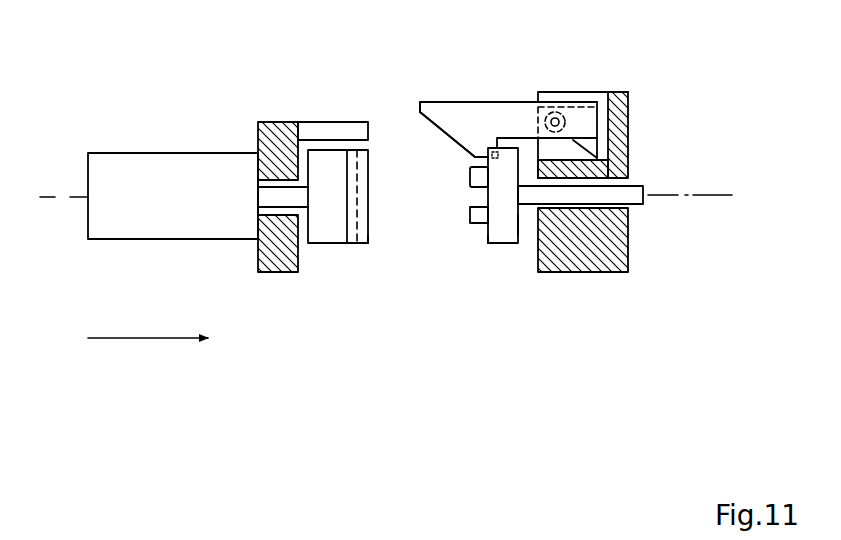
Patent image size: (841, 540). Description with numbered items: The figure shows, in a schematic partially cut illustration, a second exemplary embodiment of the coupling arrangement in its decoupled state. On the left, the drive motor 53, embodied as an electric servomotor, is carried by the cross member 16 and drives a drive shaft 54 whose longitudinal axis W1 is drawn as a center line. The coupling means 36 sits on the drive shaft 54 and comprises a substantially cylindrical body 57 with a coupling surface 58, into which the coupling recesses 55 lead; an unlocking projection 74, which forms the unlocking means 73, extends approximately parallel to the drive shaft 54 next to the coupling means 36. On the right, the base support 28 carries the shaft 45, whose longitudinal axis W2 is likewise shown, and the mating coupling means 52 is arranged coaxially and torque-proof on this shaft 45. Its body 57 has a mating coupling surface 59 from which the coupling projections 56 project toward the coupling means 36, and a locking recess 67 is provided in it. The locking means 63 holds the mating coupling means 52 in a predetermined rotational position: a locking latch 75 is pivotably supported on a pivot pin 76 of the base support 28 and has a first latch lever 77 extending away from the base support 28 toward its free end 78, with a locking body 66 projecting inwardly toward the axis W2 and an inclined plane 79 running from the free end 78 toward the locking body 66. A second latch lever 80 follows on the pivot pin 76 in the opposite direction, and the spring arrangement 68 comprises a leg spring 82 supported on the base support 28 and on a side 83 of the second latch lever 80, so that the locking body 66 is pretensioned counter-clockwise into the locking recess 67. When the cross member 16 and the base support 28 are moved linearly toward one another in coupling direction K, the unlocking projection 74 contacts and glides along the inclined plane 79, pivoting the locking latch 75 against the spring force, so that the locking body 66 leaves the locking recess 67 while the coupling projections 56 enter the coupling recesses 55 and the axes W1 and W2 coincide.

The drive motor 53 is at (210, 168).
The cross member 16 is at (265, 125).
The unlocking projection 74 is at (317, 130).
The unlocking means 73 is at (325, 108).
The coupling recesses 55 is at (357, 217).
The free end 78 is at (420, 102).
The locking latch 75 is at (450, 112).
The first latch lever 77 is at (487, 112).
The locking means 63 is at (532, 85).
The side 83 is at (567, 100).
The second latch lever 80 is at (586, 103).
The spring arrangement 68 is at (606, 97).
The pivot pin 76 is at (558, 121).
The leg spring 82 is at (597, 152).
The inclined plane 79 is at (443, 138).
The locking body 66 is at (474, 158).
The drive shaft 54 is at (270, 198).
The coupling means 36 is at (320, 235).
The coupling surface 58 is at (368, 240).
The coupling projections 56 is at (480, 178).
The mating coupling surface 59 is at (490, 243).
The mating coupling means 52 is at (502, 236).
The locking recess 67 is at (495, 158).
The cylindrical body 57 is at (519, 224).
The base support 28 is at (605, 267).
The shaft 45 is at (633, 200).
The longitudinal axis W1 is at (63, 198).
The longitudinal axis W2 is at (678, 195).
The coupling direction K is at (147, 342).